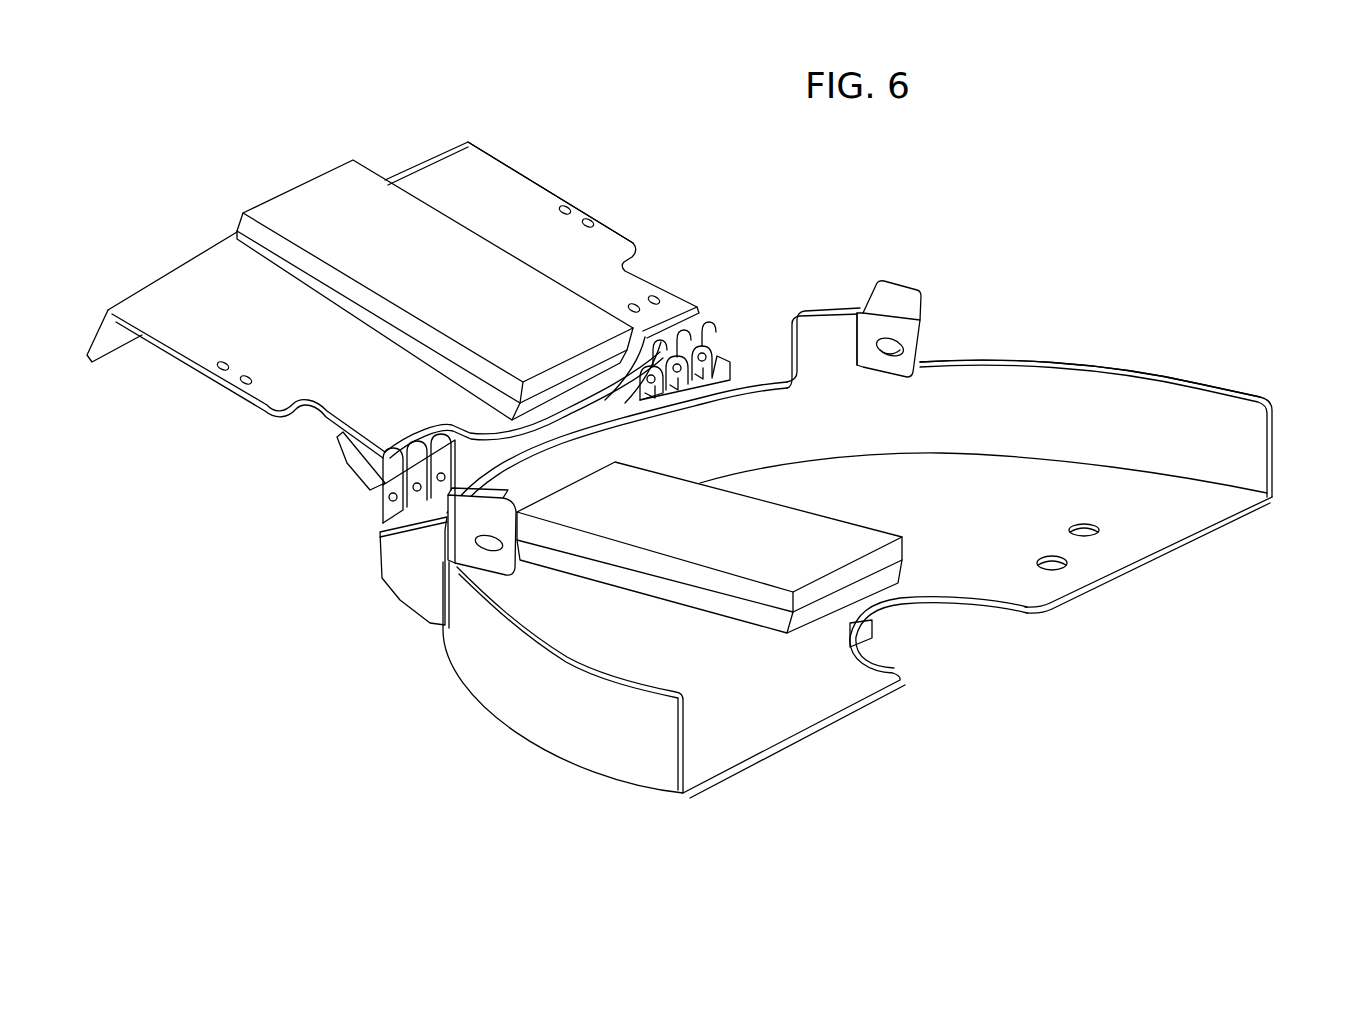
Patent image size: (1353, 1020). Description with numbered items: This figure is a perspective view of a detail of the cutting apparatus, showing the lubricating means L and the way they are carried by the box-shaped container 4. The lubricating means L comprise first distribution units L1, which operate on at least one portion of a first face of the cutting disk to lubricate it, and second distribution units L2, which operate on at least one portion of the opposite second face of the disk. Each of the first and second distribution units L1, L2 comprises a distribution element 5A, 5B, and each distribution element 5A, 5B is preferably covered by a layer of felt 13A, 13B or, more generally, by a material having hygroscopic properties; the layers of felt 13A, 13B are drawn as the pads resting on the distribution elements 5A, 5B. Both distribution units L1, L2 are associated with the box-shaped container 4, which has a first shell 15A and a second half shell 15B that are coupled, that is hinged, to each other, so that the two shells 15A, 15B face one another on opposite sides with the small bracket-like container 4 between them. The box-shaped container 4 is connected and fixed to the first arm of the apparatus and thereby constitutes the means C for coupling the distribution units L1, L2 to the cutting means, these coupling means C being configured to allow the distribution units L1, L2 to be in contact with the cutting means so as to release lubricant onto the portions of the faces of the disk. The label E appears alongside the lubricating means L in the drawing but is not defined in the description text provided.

The box-shaped container 4 is at (914, 282).
The distribution element 5A is at (278, 265).
The distribution element 5B is at (617, 572).
The layer of felt 13A is at (312, 200).
The layer of felt 13B is at (735, 522).
The first shell 15A is at (393, 331).
The second half shell 15B is at (1252, 392).
The means for coupling C is at (612, 222).
The lubricating means L is at (435, 248).
The first distribution units L1 is at (435, 248).
The second distribution units L2 is at (781, 444).
The light emitting element E is at (435, 248).